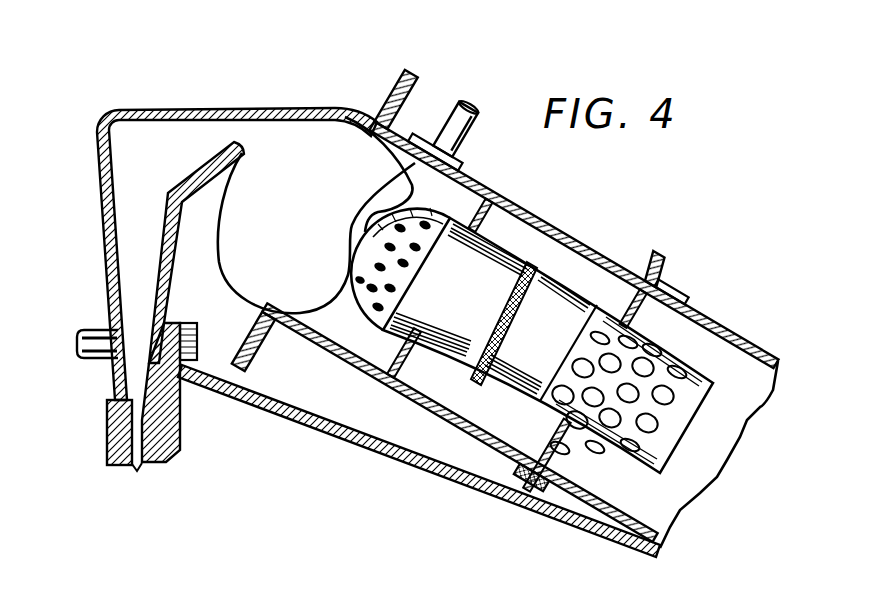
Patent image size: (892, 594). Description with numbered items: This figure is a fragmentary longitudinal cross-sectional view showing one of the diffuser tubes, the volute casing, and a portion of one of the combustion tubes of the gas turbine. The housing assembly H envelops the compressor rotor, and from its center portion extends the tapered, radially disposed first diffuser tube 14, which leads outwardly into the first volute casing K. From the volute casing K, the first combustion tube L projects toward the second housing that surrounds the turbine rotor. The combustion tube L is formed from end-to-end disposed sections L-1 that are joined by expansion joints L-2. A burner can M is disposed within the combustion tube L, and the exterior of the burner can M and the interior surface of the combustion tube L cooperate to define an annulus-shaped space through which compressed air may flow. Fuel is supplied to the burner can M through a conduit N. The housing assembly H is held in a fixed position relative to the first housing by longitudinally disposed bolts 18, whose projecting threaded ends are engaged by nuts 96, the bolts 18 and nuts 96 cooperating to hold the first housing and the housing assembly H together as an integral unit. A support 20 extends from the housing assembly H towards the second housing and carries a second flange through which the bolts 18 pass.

The housing assembly H is at (100, 266).
The first diffuser tube 14 is at (170, 262).
The first volute casing K is at (226, 281).
The nut 96 is at (190, 328).
The bolt 18 is at (84, 358).
The support 20 is at (290, 415).
The first combustion tube L is at (559, 297).
The combustion tube section L-1 is at (562, 242).
The expansion joint L-2 is at (400, 104).
The burner can M is at (474, 309).
The conduit N is at (470, 101).